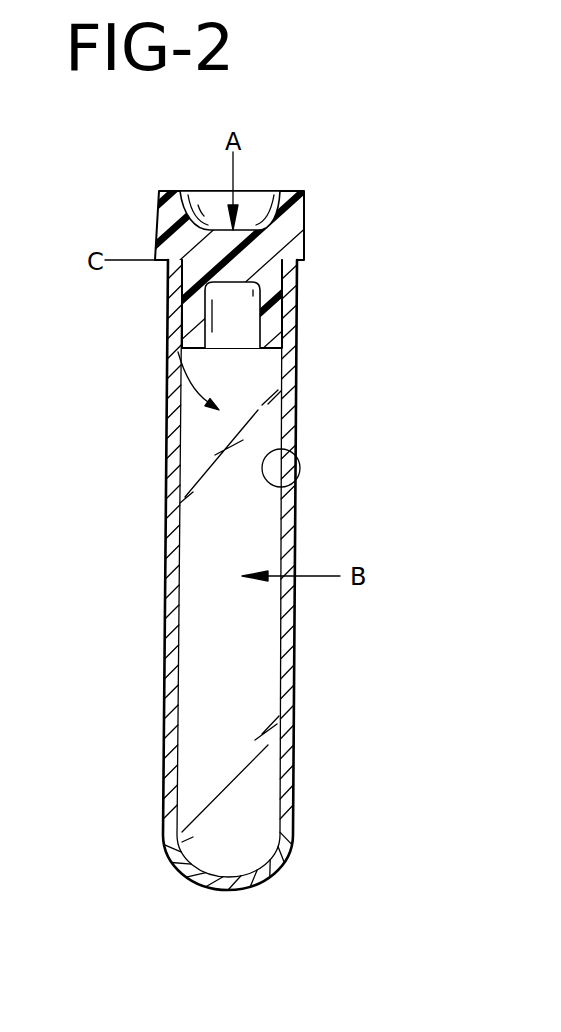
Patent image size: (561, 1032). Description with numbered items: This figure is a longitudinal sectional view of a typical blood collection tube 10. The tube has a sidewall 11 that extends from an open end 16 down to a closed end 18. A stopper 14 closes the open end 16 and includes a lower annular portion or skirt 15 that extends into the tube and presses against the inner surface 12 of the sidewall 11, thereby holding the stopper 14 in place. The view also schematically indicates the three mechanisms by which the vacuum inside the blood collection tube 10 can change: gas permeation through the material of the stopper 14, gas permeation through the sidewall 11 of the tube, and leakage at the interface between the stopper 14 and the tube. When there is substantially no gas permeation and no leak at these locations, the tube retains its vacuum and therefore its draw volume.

The blood collection tube 10 is at (310, 161).
The sidewall 11 is at (167, 302).
The inner surface 12 is at (292, 452).
The stopper 14 is at (292, 254).
The lower annular portion or skirt 15 is at (270, 330).
The open end 16 is at (268, 284).
The closed end 18 is at (257, 880).